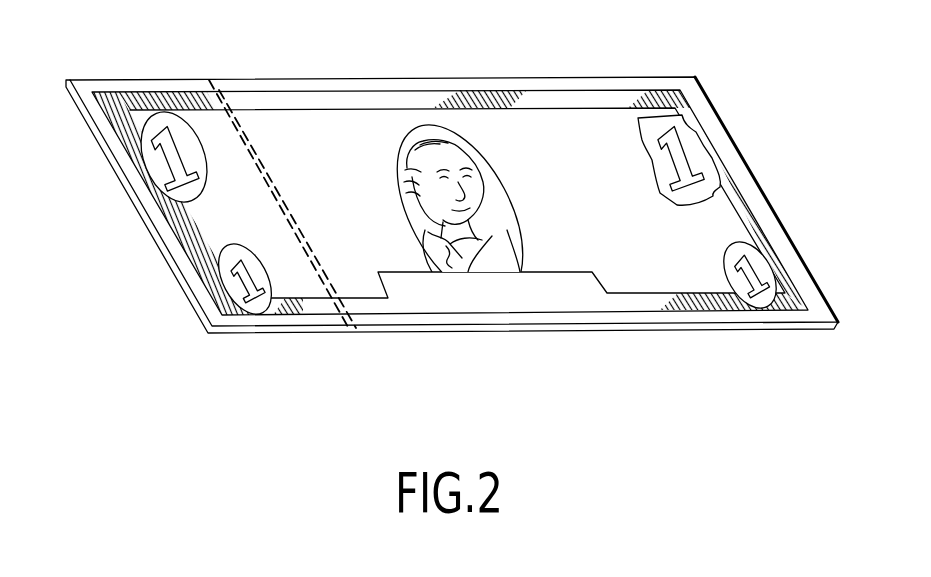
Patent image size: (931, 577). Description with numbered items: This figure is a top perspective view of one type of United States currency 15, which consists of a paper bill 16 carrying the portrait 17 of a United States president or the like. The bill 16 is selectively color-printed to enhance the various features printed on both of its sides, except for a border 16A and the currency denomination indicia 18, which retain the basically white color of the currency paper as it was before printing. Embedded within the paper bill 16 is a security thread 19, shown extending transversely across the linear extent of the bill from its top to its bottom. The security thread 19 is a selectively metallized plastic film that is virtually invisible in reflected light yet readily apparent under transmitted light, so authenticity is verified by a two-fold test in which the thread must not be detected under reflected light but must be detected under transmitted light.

The United States currency 15 is at (803, 409).
The paper bill 16 is at (777, 215).
The border 16A is at (230, 331).
The portrait 17 is at (400, 134).
The currency denomination indicia 18 is at (155, 157).
The security thread 19 is at (209, 85).